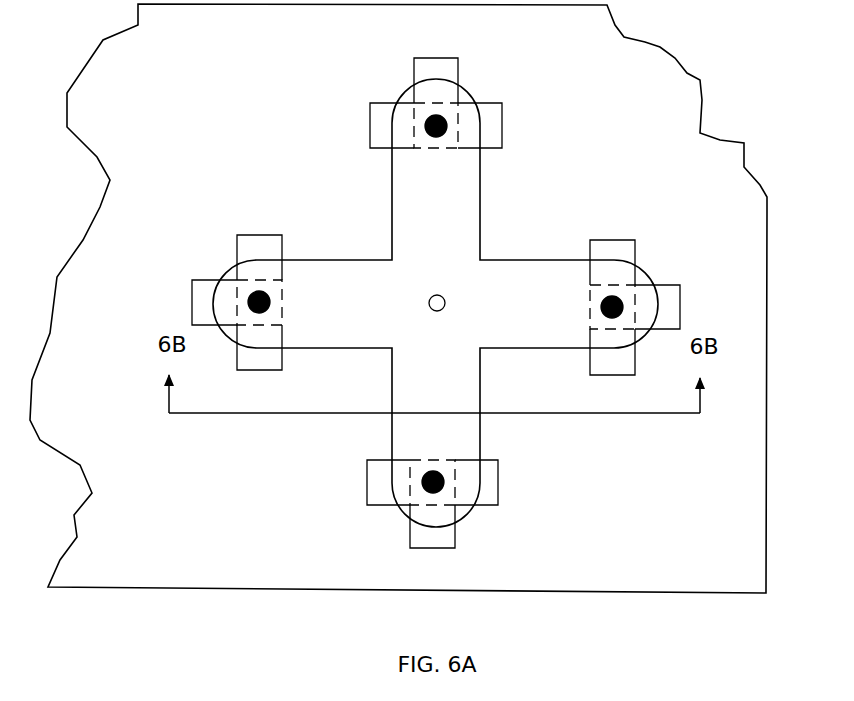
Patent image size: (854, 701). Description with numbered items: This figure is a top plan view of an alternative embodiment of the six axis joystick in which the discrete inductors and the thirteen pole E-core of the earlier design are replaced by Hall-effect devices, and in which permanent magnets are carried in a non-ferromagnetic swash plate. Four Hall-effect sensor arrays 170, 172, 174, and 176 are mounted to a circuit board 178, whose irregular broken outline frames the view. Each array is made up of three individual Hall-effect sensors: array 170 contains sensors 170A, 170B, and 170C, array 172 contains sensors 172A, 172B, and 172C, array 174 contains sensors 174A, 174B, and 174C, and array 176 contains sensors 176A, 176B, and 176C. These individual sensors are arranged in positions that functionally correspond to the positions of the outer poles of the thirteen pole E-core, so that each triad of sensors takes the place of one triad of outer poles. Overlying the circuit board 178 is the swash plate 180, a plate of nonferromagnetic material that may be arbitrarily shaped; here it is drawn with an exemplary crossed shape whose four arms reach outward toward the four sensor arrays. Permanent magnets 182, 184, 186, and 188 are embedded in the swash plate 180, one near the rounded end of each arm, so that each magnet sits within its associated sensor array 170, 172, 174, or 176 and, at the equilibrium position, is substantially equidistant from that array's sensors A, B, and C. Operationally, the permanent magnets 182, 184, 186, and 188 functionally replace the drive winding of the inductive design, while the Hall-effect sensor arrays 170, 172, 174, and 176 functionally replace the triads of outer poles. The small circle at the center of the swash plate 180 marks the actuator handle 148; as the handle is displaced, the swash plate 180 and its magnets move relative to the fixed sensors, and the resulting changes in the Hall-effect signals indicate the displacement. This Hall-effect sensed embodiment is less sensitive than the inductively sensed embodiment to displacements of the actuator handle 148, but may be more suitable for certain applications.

The actuator handle 148 is at (437, 311).
The Hall-effect sensor array 170 is at (639, 295).
The Hall-effect sensor 170A is at (610, 250).
The Hall-effect sensor 170B is at (677, 300).
The Hall-effect sensor 170C is at (610, 360).
The Hall-effect sensor array 172 is at (435, 105).
The Hall-effect sensor 172A is at (382, 124).
The Hall-effect sensor 172B is at (476, 36).
The Hall-effect sensor 172C is at (497, 124).
The Hall-effect sensor array 174 is at (220, 287).
The Hall-effect sensor 174A is at (260, 356).
The Hall-effect sensor 174B is at (204, 302).
The Hall-effect sensor 174C is at (258, 246).
The Hall-effect sensor array 176 is at (449, 505).
The Hall-effect sensor 176A is at (494, 483).
The Hall-effect sensor 176B is at (432, 536).
The Hall-effect sensor 176C is at (382, 486).
The circuit board 178 is at (165, 578).
The swash plate 180 is at (420, 255).
The permanent magnet 182 is at (602, 304).
The permanent magnet 184 is at (440, 137).
The permanent magnet 186 is at (270, 300).
The permanent magnet 188 is at (432, 472).